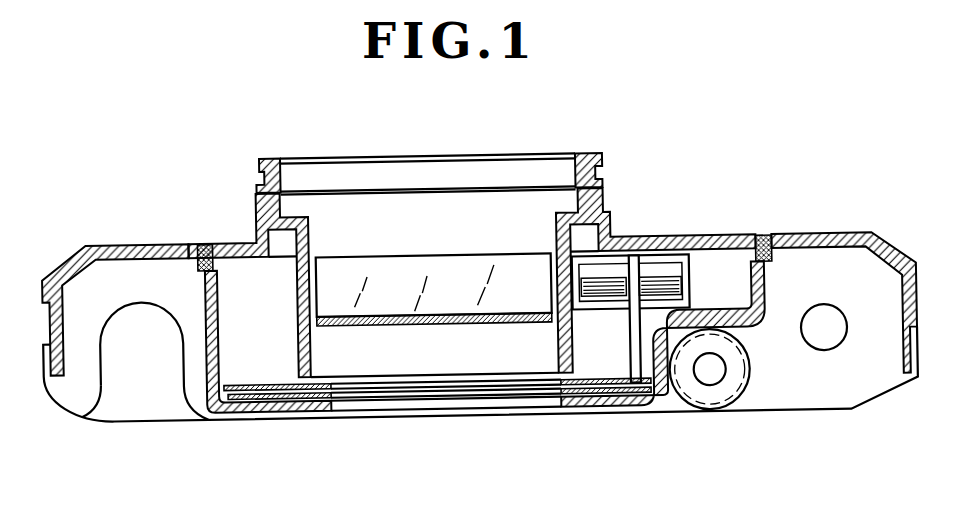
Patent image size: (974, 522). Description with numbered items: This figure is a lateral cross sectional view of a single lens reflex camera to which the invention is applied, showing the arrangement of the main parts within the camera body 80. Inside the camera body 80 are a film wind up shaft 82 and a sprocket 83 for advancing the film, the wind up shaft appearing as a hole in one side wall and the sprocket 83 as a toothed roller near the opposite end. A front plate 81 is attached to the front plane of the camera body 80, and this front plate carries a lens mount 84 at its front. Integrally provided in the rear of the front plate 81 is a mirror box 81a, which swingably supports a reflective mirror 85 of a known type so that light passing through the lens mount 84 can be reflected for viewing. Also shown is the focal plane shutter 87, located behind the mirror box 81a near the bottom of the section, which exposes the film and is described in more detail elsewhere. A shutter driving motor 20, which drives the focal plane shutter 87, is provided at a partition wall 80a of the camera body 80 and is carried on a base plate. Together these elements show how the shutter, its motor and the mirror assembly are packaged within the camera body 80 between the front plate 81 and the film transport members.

The shutter driving motor 20 is at (648, 238).
The camera body 80 is at (102, 245).
The partition wall 80a is at (740, 323).
The front plate 81 is at (705, 236).
The mirror box 81a is at (297, 298).
The film wind up shaft 82 is at (846, 318).
The sprocket 83 is at (718, 392).
The lens mount 84 is at (588, 154).
The reflective mirror 85 is at (413, 268).
The focal plane shutter 87 is at (264, 385).